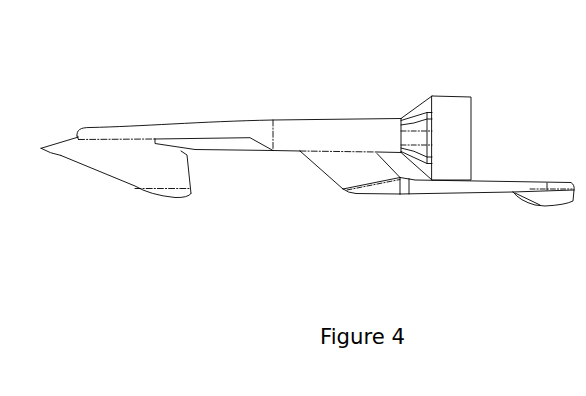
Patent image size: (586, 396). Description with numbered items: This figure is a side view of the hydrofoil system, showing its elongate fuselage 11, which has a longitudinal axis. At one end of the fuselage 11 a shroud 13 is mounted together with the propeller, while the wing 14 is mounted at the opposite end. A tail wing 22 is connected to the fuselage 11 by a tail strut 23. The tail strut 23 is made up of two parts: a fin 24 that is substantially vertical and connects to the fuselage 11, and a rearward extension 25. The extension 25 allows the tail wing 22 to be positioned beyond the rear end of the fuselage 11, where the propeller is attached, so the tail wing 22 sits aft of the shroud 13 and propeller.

The fuselage 11 is at (223, 127).
The shroud 13 is at (463, 115).
The wing 14 is at (120, 171).
The tail wing 22 is at (533, 203).
The tail strut 23 is at (373, 205).
The fin 24 is at (340, 170).
The rearward extension 25 is at (457, 187).